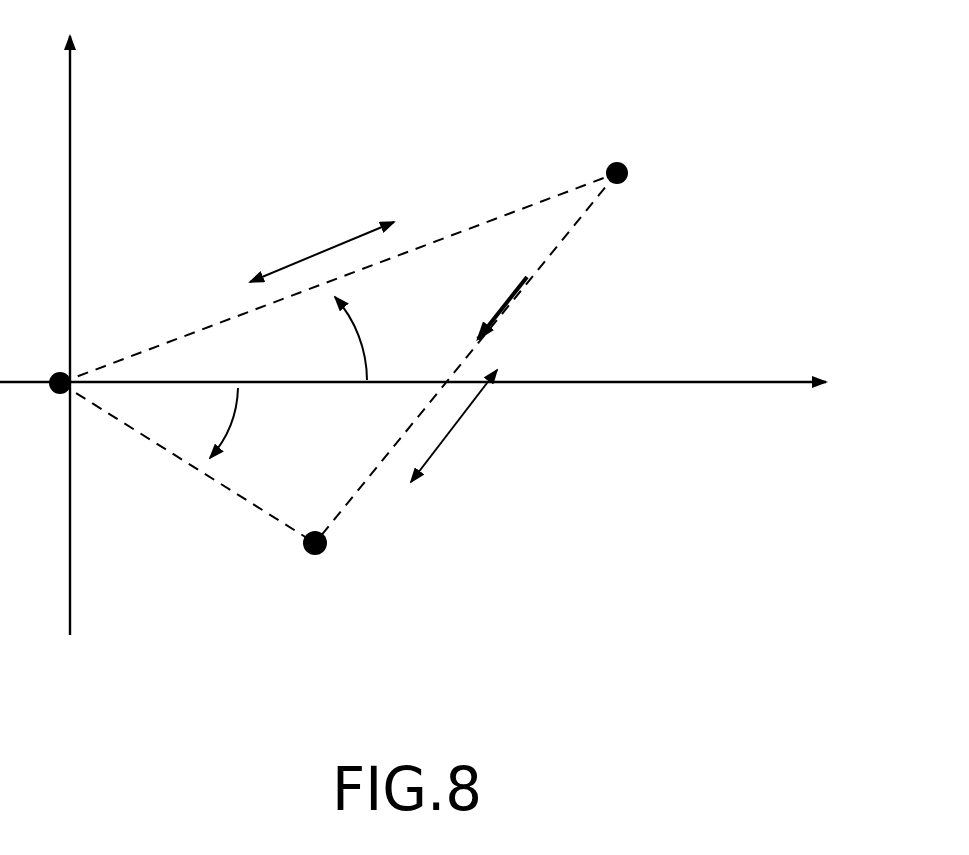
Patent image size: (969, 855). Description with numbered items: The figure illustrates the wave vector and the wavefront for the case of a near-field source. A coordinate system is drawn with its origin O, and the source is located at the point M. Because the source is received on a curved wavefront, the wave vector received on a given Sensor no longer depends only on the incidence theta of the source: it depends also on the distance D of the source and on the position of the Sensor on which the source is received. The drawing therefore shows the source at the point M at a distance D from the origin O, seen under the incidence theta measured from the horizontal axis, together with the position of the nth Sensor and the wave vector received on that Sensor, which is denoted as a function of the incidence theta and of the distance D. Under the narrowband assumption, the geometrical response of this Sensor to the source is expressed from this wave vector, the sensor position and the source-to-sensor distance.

The origin O is at (54, 357).
The source point M is at (619, 153).
The sensor Sensor is at (358, 539).
The source distance D is at (322, 248).
The source incidence theta is at (360, 331).